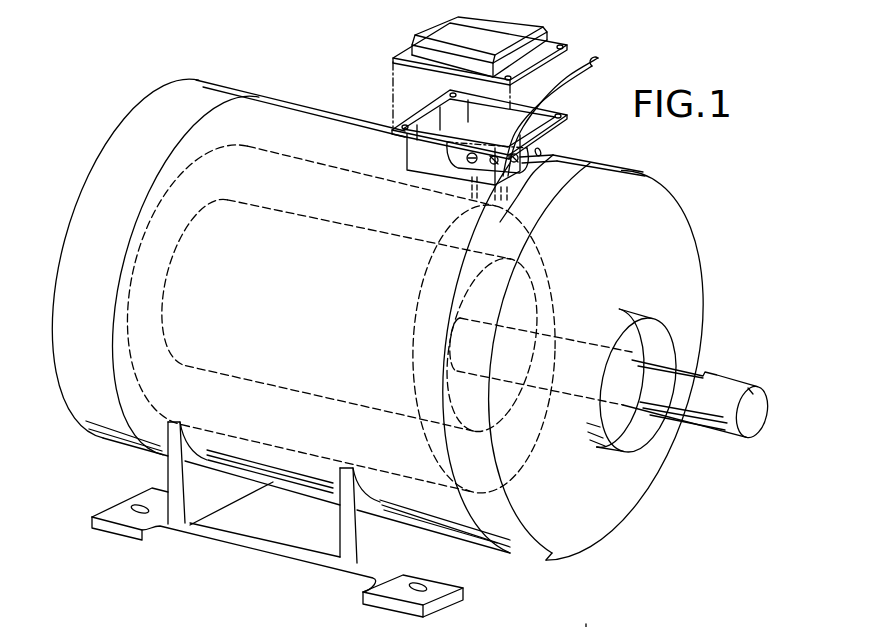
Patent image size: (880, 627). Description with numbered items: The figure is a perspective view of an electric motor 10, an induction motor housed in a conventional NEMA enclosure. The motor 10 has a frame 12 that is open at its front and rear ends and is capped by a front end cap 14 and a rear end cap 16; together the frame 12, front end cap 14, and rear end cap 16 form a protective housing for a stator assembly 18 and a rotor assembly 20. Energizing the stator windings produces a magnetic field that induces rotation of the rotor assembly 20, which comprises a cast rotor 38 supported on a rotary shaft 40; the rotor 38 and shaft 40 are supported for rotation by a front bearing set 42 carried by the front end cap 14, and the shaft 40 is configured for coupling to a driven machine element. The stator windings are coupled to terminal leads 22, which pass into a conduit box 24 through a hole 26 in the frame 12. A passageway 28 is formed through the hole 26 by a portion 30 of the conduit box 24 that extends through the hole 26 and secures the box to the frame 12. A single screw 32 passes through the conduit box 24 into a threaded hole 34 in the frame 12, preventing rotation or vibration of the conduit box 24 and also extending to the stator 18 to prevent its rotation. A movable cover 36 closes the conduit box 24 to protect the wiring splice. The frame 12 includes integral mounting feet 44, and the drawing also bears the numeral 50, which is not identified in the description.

The electric motor 10 is at (104, 100).
The frame 12 is at (303, 103).
The front end cap 14 is at (590, 162).
The rear end cap 16 is at (196, 80).
The stator assembly 18 is at (256, 146).
The rotor assembly 20 is at (183, 303).
The terminal leads 22 is at (580, 72).
The conduit box 24 is at (413, 157).
The hole 26 is at (518, 186).
The passageway 28 is at (513, 143).
The portion of the conduit box 30 is at (528, 168).
The screw 32 is at (471, 154).
The threaded hole 34 is at (440, 185).
The cover 36 is at (510, 35).
The cast rotor 38 is at (183, 354).
The rotary shaft 40 is at (703, 372).
The front bearing set 42 is at (617, 322).
The integral mounting feet 44 is at (220, 525).
The mounting foot 50 is at (599, 624).